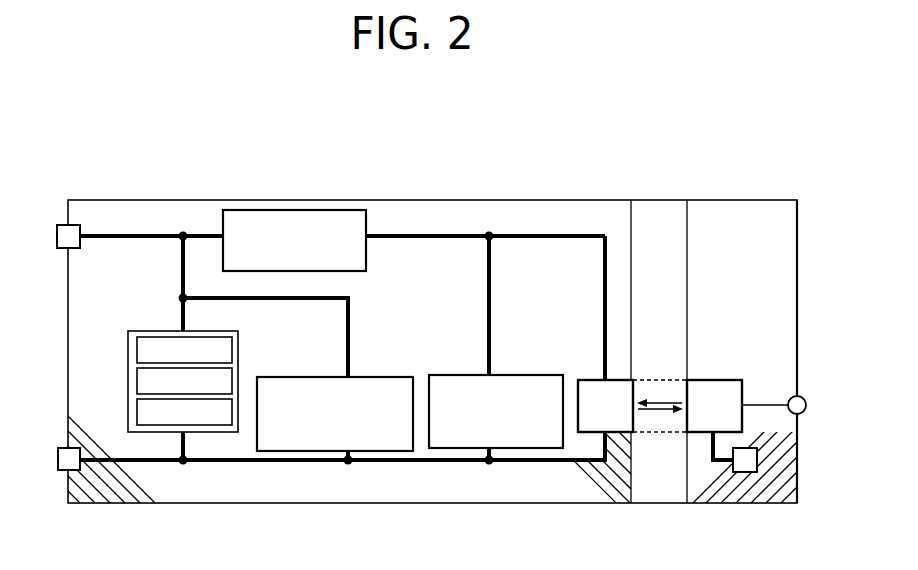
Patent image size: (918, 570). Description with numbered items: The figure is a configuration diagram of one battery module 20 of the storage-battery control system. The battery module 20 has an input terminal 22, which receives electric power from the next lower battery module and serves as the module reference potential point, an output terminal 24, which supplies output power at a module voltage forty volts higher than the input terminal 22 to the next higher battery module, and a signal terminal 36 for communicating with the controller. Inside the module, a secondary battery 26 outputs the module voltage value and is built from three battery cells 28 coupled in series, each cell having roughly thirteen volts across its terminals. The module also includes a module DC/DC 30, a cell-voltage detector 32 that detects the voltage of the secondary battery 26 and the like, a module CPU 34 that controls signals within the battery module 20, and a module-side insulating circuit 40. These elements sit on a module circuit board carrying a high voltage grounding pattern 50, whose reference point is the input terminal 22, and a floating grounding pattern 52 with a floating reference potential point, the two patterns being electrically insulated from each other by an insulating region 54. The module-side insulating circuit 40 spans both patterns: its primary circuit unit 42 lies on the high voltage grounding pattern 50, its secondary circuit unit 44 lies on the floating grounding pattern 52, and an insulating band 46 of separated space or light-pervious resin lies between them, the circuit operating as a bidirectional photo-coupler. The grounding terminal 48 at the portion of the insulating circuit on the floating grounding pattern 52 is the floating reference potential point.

The battery module 20 is at (140, 200).
The input terminal 22 is at (58, 449).
The output terminal 24 is at (61, 250).
The secondary battery 26 is at (161, 354).
The battery cell 28 is at (150, 383).
The module DC/DC 30 is at (223, 224).
The cell-voltage detector 32 is at (384, 377).
The module CPU 34 is at (524, 375).
The signal terminal 36 is at (805, 396).
The module-side insulating circuit 40 is at (660, 353).
The primary circuit unit 42 is at (610, 383).
The secondary circuit unit 44 is at (716, 386).
The insulating band 46 is at (664, 392).
The grounding terminal 48 is at (757, 458).
The high voltage grounding pattern 50 is at (606, 490).
The floating grounding pattern 52 is at (732, 492).
The insulating region 54 is at (662, 490).